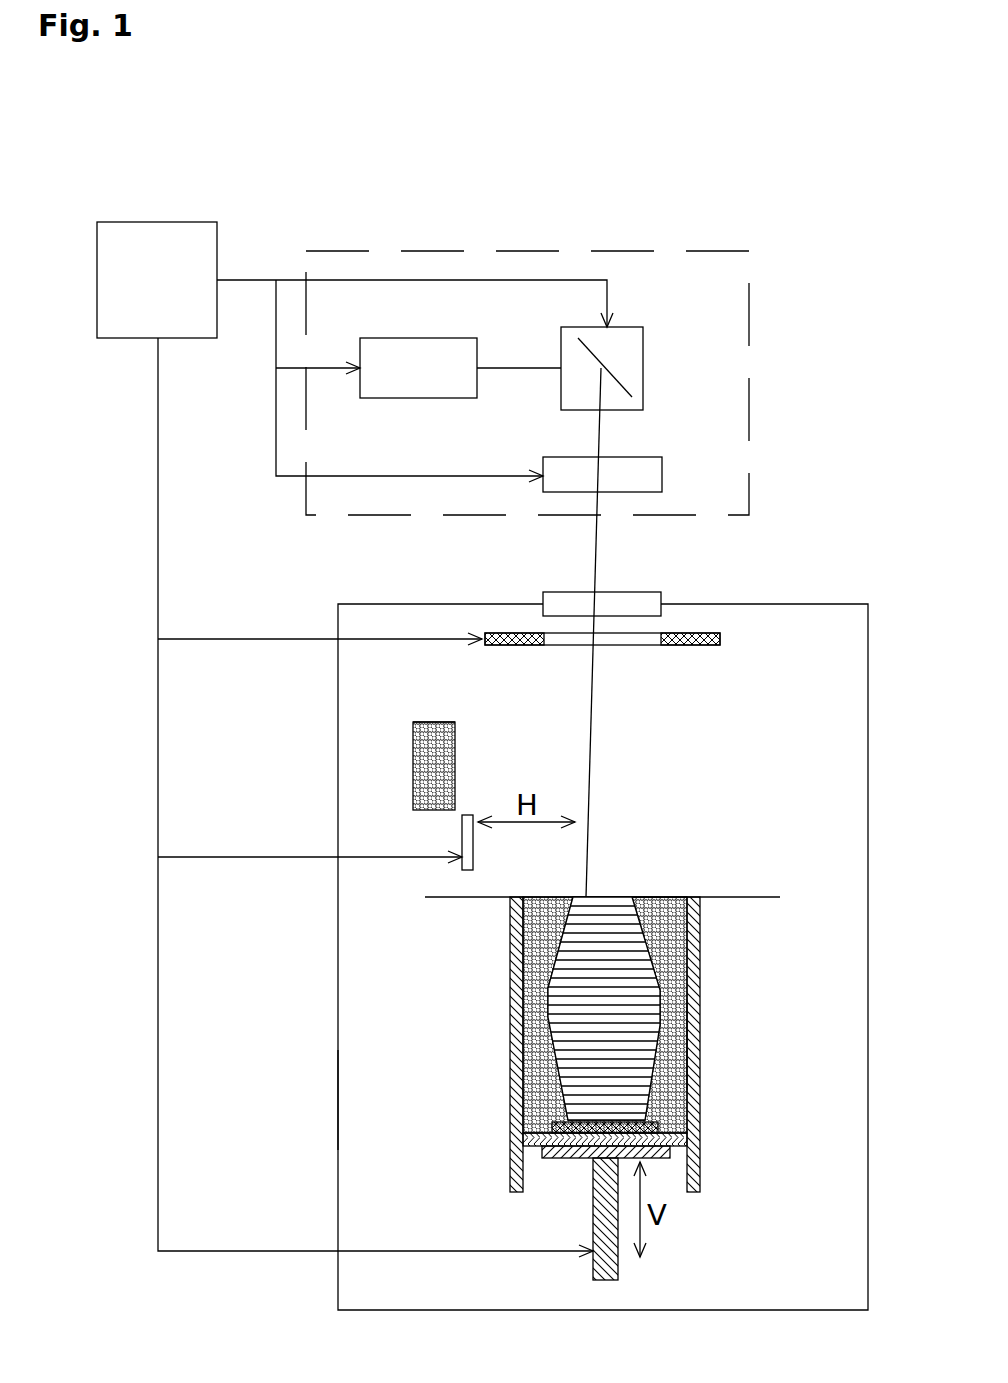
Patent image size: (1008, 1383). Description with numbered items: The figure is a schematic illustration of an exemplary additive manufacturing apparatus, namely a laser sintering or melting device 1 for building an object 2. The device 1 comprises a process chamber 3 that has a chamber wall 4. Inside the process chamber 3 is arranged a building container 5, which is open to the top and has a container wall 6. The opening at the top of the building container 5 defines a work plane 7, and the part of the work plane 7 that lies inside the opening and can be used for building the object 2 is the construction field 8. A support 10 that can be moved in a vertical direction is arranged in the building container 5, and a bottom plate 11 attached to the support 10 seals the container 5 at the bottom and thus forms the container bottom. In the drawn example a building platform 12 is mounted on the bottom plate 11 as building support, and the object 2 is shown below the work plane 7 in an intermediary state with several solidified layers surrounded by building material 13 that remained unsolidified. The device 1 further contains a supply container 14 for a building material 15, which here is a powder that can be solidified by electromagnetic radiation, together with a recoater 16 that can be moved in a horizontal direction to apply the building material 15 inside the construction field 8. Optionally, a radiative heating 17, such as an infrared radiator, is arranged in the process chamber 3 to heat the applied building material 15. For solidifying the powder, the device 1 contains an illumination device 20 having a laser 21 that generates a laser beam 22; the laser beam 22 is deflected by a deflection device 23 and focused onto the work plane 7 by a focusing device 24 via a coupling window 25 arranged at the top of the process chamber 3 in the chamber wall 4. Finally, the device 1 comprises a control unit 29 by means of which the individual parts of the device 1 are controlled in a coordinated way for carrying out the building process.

The laser sintering or melting device 1 is at (855, 183).
The object 2 is at (622, 955).
The process chamber 3 is at (786, 637).
The chamber wall 4 is at (338, 1098).
The building container 5 is at (702, 1103).
The container wall 6 is at (693, 1045).
The work plane 7 is at (752, 888).
The construction field 8 is at (663, 888).
The support 10 is at (582, 1153).
The bottom plate 11 is at (552, 1141).
The building platform 12 is at (520, 1125).
The building material 13 is at (543, 943).
The supply container 14 is at (432, 722).
The building material 15 is at (455, 767).
The recoater 16 is at (462, 833).
The radiative heating 17 is at (490, 636).
The illumination device 20 is at (749, 367).
The laser 21 is at (421, 398).
The laser beam 22 is at (500, 366).
The deflection device 23 is at (632, 338).
The focusing device 24 is at (632, 468).
The coupling window 25 is at (638, 603).
The control unit 29 is at (355, 739).